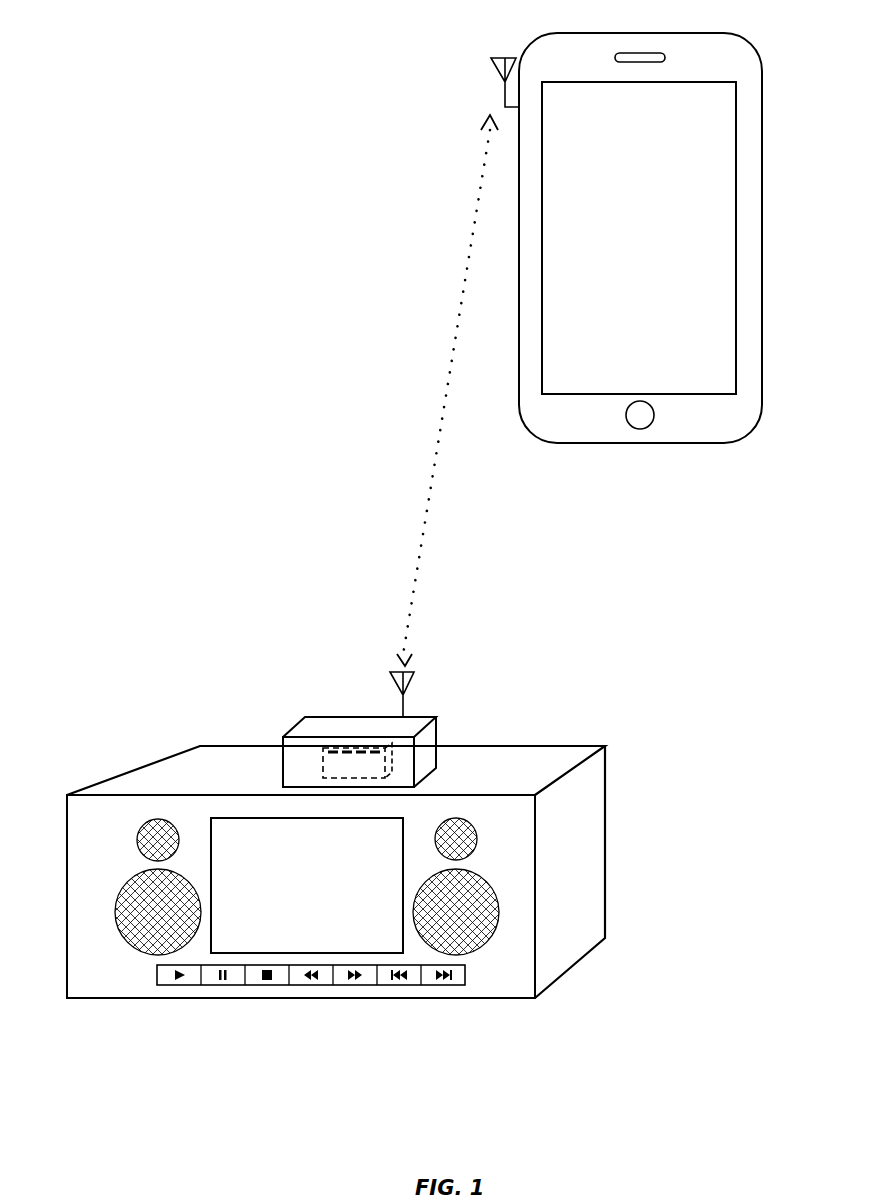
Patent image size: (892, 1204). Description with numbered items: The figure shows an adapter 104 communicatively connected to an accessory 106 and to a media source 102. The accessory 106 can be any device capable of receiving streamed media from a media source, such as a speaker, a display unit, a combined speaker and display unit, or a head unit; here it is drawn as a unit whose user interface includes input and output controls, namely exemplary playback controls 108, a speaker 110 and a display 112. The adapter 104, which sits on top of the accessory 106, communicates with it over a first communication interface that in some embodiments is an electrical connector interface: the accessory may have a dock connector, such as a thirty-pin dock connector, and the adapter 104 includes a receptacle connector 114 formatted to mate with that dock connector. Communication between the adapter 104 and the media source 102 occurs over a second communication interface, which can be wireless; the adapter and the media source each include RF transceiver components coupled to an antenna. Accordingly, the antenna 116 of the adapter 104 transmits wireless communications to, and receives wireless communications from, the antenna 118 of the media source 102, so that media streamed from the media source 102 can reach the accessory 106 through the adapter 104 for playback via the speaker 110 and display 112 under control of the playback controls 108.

The media source 102 is at (755, 55).
The adapter 104 is at (427, 740).
The accessory 106 is at (562, 860).
The playback controls 108 is at (468, 975).
The speaker 110 is at (498, 912).
The display 112 is at (205, 830).
The receptacle connector 114 is at (335, 770).
The antenna 116 is at (393, 684).
The antenna 118 is at (503, 90).